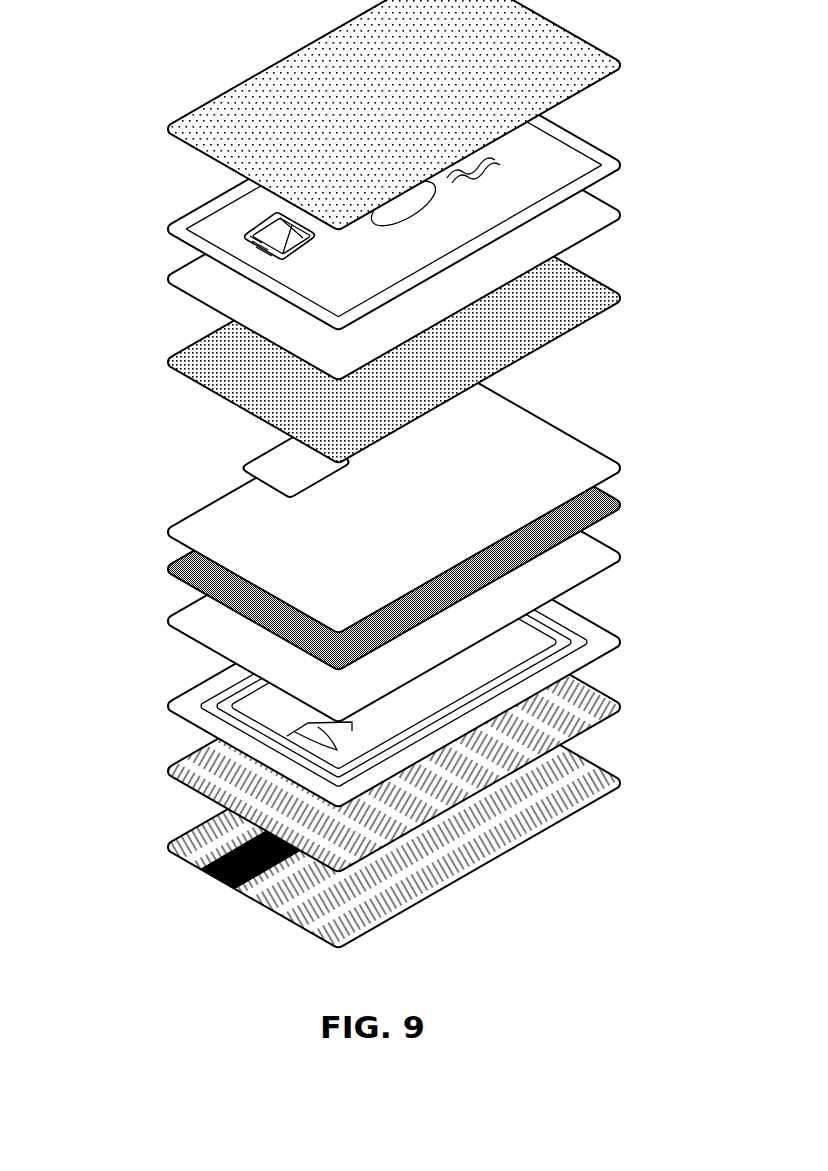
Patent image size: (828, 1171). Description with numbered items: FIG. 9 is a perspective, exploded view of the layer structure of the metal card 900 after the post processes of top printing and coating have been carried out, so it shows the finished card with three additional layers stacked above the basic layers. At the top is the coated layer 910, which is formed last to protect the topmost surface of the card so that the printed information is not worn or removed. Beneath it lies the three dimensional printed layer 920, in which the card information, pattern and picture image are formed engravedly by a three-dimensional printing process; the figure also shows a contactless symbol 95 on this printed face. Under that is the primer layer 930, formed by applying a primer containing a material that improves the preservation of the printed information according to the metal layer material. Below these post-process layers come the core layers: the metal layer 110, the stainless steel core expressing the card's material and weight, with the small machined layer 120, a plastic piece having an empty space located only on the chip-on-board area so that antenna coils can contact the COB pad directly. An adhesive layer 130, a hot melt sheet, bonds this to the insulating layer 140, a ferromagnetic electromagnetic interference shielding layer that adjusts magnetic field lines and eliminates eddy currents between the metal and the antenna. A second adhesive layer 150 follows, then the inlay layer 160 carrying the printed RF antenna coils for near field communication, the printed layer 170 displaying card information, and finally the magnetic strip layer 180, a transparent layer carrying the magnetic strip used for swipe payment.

The card 900 is at (108, 65).
The coated layer 910 is at (622, 65).
The three dimensional printed layer 920 is at (440, 197).
The primer layer 930 is at (622, 215).
The contactless indicator 95 is at (473, 172).
The metal layer 110 is at (622, 298).
The machined layer 120 is at (238, 468).
The adhesive layer 130 is at (622, 468).
The insulating layer 140 is at (622, 505).
The adhesive layer 150 is at (622, 557).
The inlay layer 160 is at (622, 642).
The printed layer 170 is at (622, 707).
The magnetic strip layer 180 is at (622, 783).